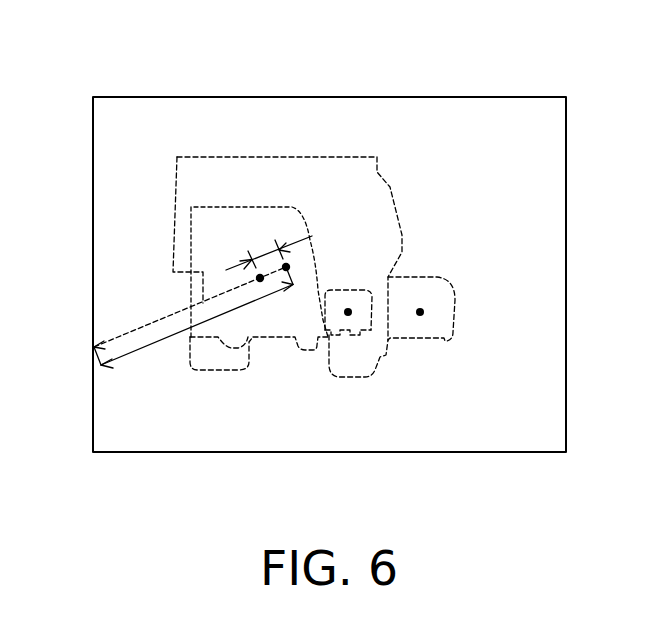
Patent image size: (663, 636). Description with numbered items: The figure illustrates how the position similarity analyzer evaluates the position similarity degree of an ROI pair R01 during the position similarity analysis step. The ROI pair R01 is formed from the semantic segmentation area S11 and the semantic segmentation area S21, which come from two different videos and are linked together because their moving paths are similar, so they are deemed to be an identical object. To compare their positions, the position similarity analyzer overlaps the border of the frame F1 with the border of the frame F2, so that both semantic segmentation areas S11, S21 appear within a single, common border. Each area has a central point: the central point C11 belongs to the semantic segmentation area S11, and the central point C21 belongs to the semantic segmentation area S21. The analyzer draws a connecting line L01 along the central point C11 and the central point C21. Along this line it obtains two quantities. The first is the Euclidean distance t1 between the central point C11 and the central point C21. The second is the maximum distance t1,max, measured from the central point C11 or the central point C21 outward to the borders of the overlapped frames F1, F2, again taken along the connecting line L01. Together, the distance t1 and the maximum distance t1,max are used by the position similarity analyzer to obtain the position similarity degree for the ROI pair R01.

The frame F1 is at (448, 97).
The frame F2 is at (518, 97).
The ROI pair R01 is at (349, 48).
The semantic segmentation area S11 is at (230, 157).
The semantic segmentation area S21 is at (265, 207).
The central point C11 is at (287, 265).
The central point C21 is at (250, 273).
The connecting line L01 is at (137, 328).
The Euclidean distance t1 is at (269, 245).
The maximum distance t1,max is at (197, 327).